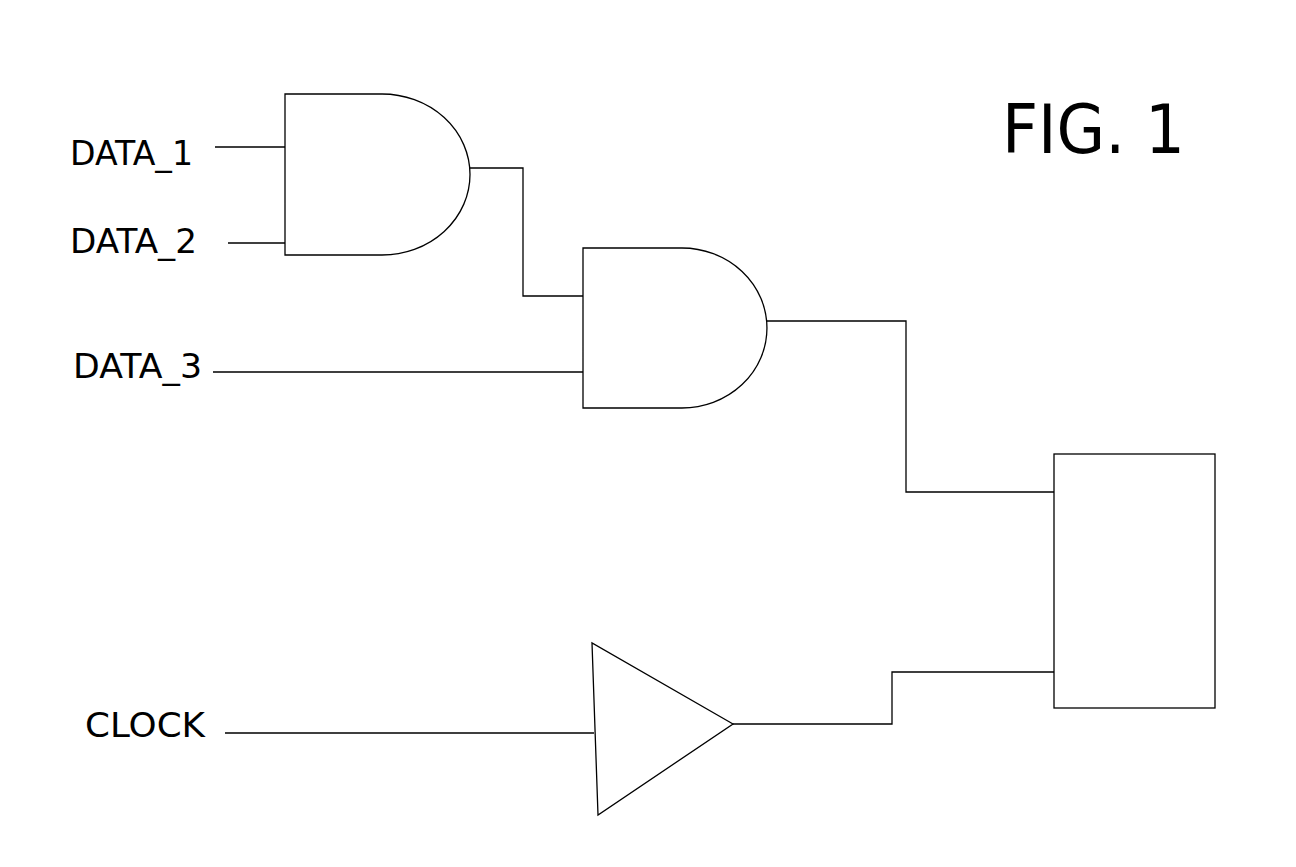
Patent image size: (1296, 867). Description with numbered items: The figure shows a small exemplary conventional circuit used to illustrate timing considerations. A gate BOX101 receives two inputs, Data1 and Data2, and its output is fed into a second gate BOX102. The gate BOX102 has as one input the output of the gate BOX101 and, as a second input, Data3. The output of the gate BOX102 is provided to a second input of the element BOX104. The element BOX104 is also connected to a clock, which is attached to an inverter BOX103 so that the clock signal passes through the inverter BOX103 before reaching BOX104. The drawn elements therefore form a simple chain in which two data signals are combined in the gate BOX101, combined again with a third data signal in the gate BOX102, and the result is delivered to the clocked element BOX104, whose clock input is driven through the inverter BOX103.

The gate BOX101 is at (384, 90).
The gate BOX102 is at (686, 244).
The inverter BOX103 is at (667, 678).
The clocked element BOX104 is at (1140, 446).